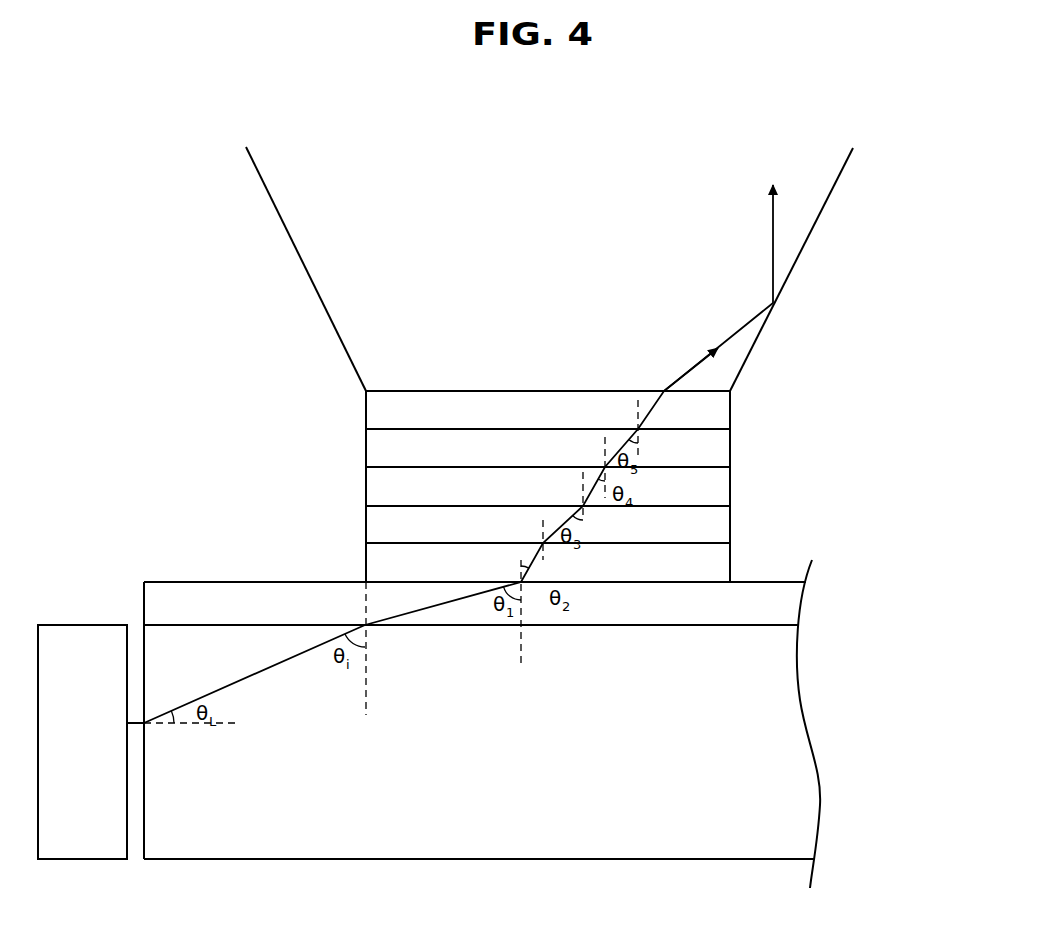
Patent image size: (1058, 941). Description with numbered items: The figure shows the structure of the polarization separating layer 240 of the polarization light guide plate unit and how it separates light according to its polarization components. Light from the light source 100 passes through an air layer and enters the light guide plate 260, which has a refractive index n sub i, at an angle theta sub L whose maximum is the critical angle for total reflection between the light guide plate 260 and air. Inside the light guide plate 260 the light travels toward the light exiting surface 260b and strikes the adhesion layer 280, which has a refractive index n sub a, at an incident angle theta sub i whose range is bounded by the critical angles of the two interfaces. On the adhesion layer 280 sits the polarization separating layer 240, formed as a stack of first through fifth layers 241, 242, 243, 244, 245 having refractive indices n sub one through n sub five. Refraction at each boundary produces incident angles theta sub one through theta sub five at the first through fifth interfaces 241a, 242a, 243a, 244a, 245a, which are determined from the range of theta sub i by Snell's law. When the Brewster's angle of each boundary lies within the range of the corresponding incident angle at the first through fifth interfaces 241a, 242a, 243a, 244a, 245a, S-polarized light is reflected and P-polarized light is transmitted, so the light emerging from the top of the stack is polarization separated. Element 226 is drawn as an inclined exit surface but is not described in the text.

The light source 100 is at (60, 637).
The inclined exit surface 226 is at (790, 230).
The polarization separating layer 240 is at (515, 486).
The first layer 241 is at (383, 555).
The second layer 242 is at (383, 524).
The third layer 243 is at (383, 486).
The fourth layer 244 is at (383, 447).
The fifth layer 245 is at (383, 410).
The first interface 241a is at (712, 582).
The second interface 242a is at (712, 543).
The third interface 243a is at (712, 506).
The fourth interface 244a is at (712, 467).
The fifth interface 245a is at (712, 429).
The light guide plate 260 is at (788, 732).
The light exiting surface 260b is at (767, 627).
The adhesion layer 280 is at (160, 593).